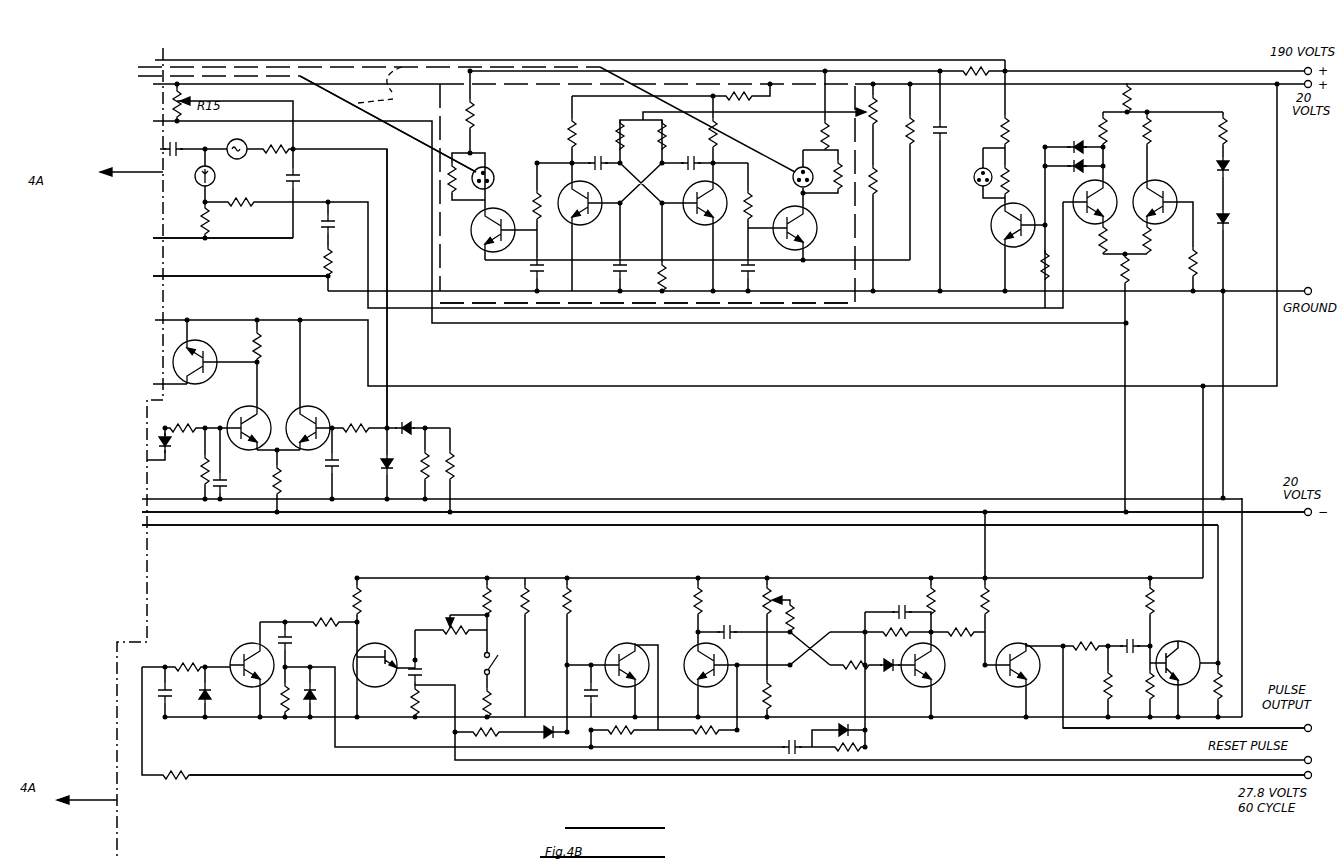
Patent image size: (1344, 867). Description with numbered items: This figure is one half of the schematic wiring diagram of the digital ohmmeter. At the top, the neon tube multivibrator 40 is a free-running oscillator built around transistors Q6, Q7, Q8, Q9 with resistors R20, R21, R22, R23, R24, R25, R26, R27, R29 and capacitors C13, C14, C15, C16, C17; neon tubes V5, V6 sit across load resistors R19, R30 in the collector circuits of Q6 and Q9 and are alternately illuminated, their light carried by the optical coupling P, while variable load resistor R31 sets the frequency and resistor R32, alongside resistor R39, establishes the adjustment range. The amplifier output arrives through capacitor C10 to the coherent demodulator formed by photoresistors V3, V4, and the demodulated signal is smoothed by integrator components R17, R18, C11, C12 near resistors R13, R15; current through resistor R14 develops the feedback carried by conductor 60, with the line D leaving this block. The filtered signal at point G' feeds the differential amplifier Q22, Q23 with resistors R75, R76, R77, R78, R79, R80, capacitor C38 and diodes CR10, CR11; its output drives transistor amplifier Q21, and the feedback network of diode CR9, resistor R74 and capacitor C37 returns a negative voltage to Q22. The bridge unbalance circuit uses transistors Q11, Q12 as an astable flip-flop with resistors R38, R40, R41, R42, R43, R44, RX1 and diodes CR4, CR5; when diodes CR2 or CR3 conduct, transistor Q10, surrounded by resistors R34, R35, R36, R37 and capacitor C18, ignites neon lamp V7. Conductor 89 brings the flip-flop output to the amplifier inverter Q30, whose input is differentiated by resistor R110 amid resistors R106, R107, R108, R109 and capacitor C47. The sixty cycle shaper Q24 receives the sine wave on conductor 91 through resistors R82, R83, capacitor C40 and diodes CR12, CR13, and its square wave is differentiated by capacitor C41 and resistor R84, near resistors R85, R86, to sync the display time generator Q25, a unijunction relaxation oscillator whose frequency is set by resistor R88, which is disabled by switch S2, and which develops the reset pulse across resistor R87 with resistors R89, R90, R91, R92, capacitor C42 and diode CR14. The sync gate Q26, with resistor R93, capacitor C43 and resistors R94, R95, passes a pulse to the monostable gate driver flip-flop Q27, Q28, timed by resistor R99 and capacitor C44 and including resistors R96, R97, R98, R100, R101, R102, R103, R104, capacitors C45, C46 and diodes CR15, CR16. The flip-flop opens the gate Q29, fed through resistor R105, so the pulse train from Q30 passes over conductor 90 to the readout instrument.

The potentiometer R13 is at (172, 106).
The capacitor C10 is at (172, 142).
The photoresistor V4 is at (237, 142).
The resistor R17 is at (275, 141).
The photoresistor V3 is at (214, 176).
The capacitor C11 is at (304, 174).
The resistor R14 is at (189, 220).
The resistor R15 is at (235, 211).
The conductor 60 is at (218, 240).
The capacitor C12 is at (341, 224).
The resistor R18 is at (343, 259).
The line D is at (185, 278).
The light transmitting means P is at (388, 124).
The load resistor R19 is at (450, 176).
The resistor R20 is at (484, 114).
The neon tube V5 is at (494, 174).
The transistor Q6 is at (481, 230).
The resistor R21 is at (643, 204).
The resistor R22 is at (555, 133).
The resistor R23 is at (607, 133).
The capacitor C14 is at (593, 155).
The transistor Q7 is at (591, 203).
The transistor Q8 is at (695, 200).
The resistor R25 is at (676, 135).
The capacitor C16 is at (692, 155).
The resistor R26 is at (733, 133).
The resistor R27 is at (737, 103).
The transistor Q9 is at (804, 228).
The neon tube V6 is at (799, 166).
The resistor R29 is at (831, 133).
The load resistor R30 is at (834, 176).
The capacitor C13 is at (522, 270).
The capacitor C15 is at (605, 270).
The resistor R24 is at (675, 277).
The capacitor C17 is at (761, 270).
The neon tube multivibrator 40 is at (813, 303).
The variable load resistor R31 is at (886, 110).
The resistor R39 is at (1007, 184).
The resistor R32 is at (886, 180).
The capacitor C18 is at (953, 127).
The resistor R34 is at (974, 63).
The resistor R35 is at (1018, 126).
The neon lamp V7 is at (972, 177).
The resistor R36 is at (1018, 180).
The transistor Q10 is at (997, 225).
The resistor R37 is at (1033, 265).
The diode CR2 is at (1079, 138).
The diode CR3 is at (1052, 162).
The resistor R38 is at (1115, 130).
The resistor R40 is at (1142, 98).
The resistor R42 is at (1161, 130).
The transistor Q11 is at (1103, 192).
The transistor Q12 is at (1163, 191).
The resistor R44 is at (1239, 130).
The diode CR4 is at (1238, 167).
The diode CR5 is at (1238, 220).
The resistor R43 is at (1158, 239).
The resistor R41 is at (1139, 269).
The resistor RX1 is at (1200, 262).
The transistor amplifier Q21 is at (208, 348).
The resistor R76 is at (271, 345).
The transistor Q22 is at (242, 410).
The transistor Q23 is at (314, 406).
The point G' is at (365, 288).
The resistor R74 is at (182, 419).
The diode CR9 is at (178, 444).
The resistor R75 is at (188, 470).
The capacitor C37 is at (234, 483).
The resistor R77 is at (290, 480).
The capacitor C38 is at (343, 459).
The diode CR11 is at (369, 470).
The resistor R78 is at (355, 419).
The diode CR10 is at (409, 417).
The resistor R79 is at (414, 465).
The resistor R80 is at (464, 465).
The conductor 89 is at (210, 528).
The 60 cycle shaper Q24 is at (244, 642).
The resistor R82 is at (186, 658).
The capacitor C40 is at (172, 698).
The diode CR12 is at (222, 696).
The resistor R84 is at (280, 710).
The resistor R83 is at (175, 768).
The capacitor C41 is at (299, 640).
The diode CR13 is at (312, 680).
The resistor R85 is at (322, 613).
The resistor R86 is at (371, 600).
The display time generator Q25 is at (382, 644).
The resistor R89 is at (471, 600).
The resistor R88 is at (451, 640).
The resistor R92 is at (513, 600).
The switch S2 is at (499, 664).
The capacitor C42 is at (428, 672).
The resistor R87 is at (428, 701).
The resistor R90 is at (500, 703).
The resistor R91 is at (484, 739).
The diode CR14 is at (546, 733).
The resistor R93 is at (581, 600).
The sync gate Q26 is at (627, 654).
The capacitor C43 is at (603, 696).
The resistor R94 is at (619, 738).
The transistor Q27 is at (688, 646).
The resistor R96 is at (681, 600).
The capacitor C44 is at (728, 624).
The potentiometer R97 is at (754, 600).
The resistor R99 is at (805, 616).
The resistor R95 is at (704, 738).
The resistor R98 is at (781, 695).
The capacitor C45 is at (787, 740).
The diode CR15 is at (845, 723).
The resistor R101 is at (845, 754).
The resistor R100 is at (851, 659).
The diode CR16 is at (889, 657).
The resistor R102 is at (894, 625).
The capacitor C46 is at (899, 604).
The transistor Q28 is at (935, 665).
The resistor R103 is at (949, 600).
The resistor R104 is at (959, 625).
The resistor R105 is at (1002, 600).
The transistor gate Q29 is at (1028, 634).
The resistor R106 is at (1084, 638).
The capacitor C47 is at (1125, 636).
The resistor R107 is at (1092, 685).
The resistor R109 is at (1136, 687).
The resistor R108 is at (1168, 600).
The amplifier inverter Q30 is at (1195, 634).
The resistor R110 is at (1225, 680).
The conductor 90 is at (1198, 733).
The conductor 91 is at (1086, 777).